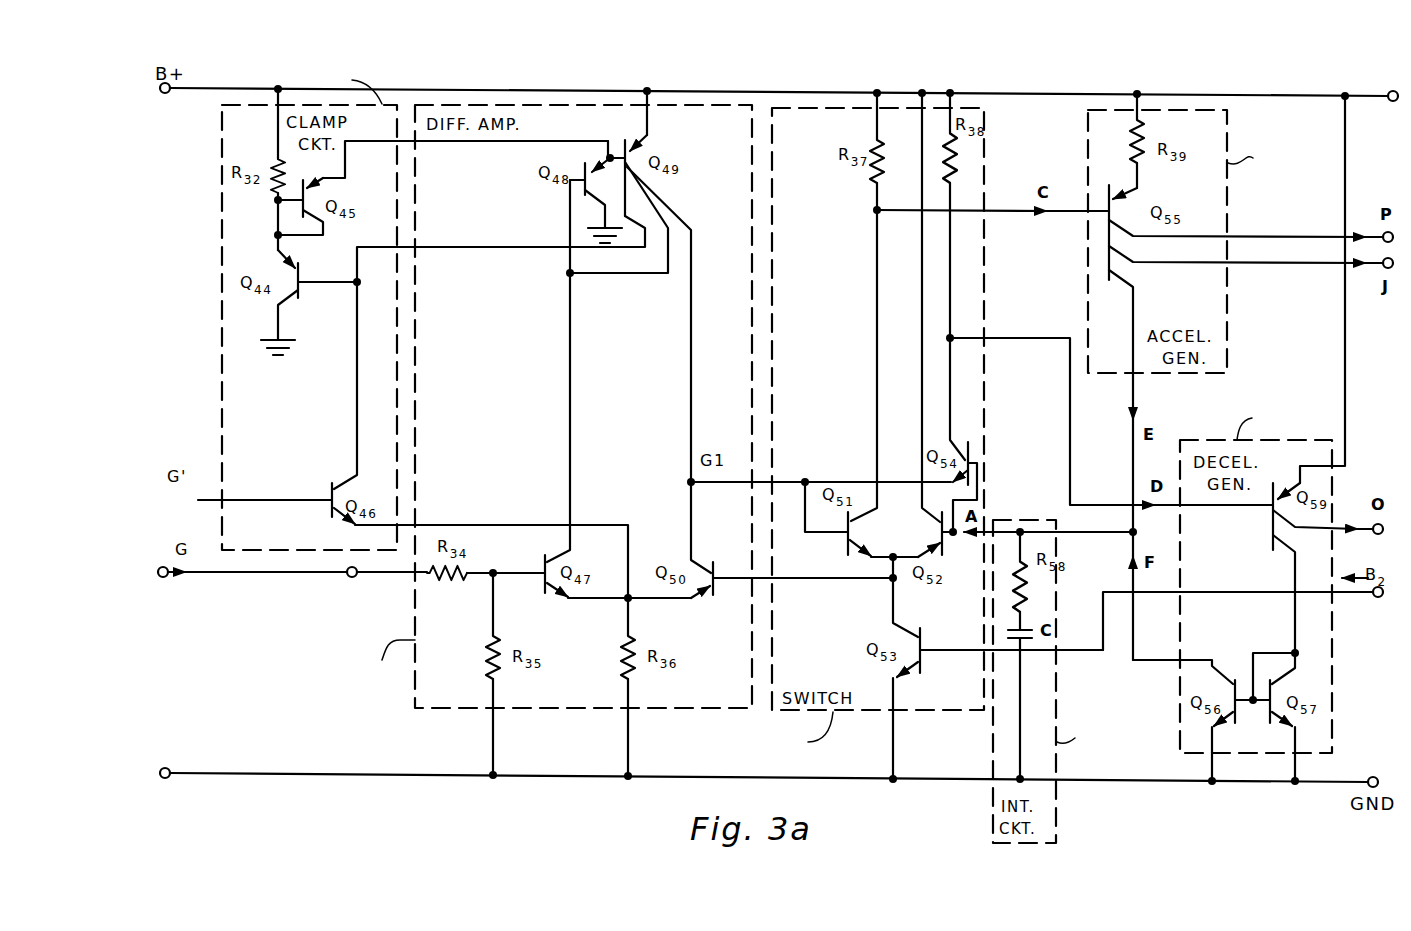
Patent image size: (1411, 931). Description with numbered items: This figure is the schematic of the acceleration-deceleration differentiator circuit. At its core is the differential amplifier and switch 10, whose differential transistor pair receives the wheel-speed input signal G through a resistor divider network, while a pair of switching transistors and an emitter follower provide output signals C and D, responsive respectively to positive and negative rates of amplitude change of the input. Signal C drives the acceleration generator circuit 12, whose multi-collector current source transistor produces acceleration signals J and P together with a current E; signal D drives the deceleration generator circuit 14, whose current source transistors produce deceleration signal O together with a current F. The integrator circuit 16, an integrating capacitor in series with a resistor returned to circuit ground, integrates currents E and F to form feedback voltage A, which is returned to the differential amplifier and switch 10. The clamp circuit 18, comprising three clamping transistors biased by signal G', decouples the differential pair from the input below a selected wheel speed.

The differential amplifier and switch 10 is at (656, 435).
The acceleration generator circuit 12 is at (1240, 377).
The deceleration generator circuit 14 is at (1243, 438).
The integrator circuit 16 is at (1047, 681).
The clamp circuit 18 is at (421, 329).